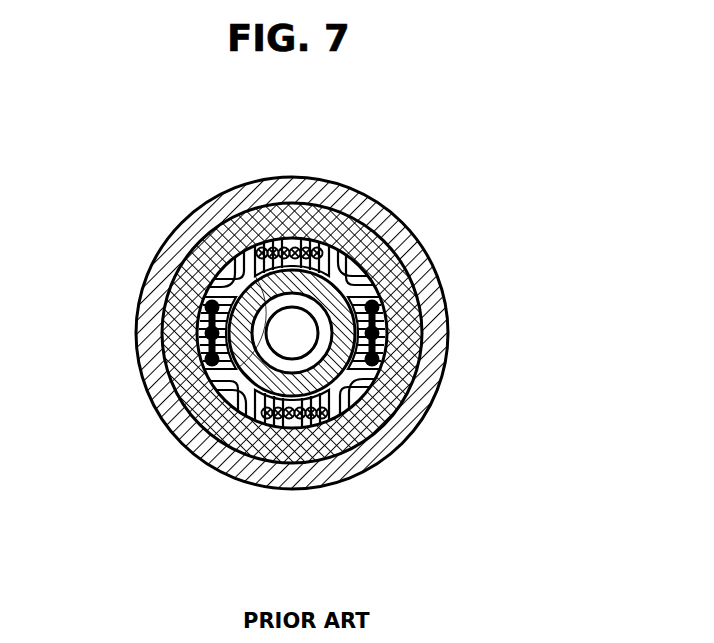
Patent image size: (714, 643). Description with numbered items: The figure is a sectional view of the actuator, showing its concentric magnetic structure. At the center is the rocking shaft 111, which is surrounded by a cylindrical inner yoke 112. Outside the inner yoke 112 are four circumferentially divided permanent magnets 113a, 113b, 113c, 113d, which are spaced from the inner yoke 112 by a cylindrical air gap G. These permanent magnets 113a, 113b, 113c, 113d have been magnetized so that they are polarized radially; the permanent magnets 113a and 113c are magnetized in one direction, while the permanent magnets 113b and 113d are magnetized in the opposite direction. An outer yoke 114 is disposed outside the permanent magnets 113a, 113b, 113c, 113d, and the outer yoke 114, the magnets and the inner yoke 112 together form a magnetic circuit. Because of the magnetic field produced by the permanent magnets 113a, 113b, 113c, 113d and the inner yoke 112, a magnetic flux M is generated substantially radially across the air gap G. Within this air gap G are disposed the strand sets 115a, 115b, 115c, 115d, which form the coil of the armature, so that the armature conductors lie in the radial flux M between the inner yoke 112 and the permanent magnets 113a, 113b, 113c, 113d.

The rocking shaft 111 is at (300, 325).
The inner yoke 112 is at (333, 288).
The permanent magnet 113a is at (222, 240).
The permanent magnet 113b is at (405, 361).
The permanent magnet 113c is at (322, 432).
The permanent magnet 113d is at (165, 361).
The outer yoke 114 is at (203, 452).
The strand set 115a is at (292, 250).
The strand set 115b is at (385, 334).
The strand set 115c is at (285, 415).
The strand set 115d is at (208, 317).
The air gap G is at (229, 393).
The magnetic flux M is at (375, 446).